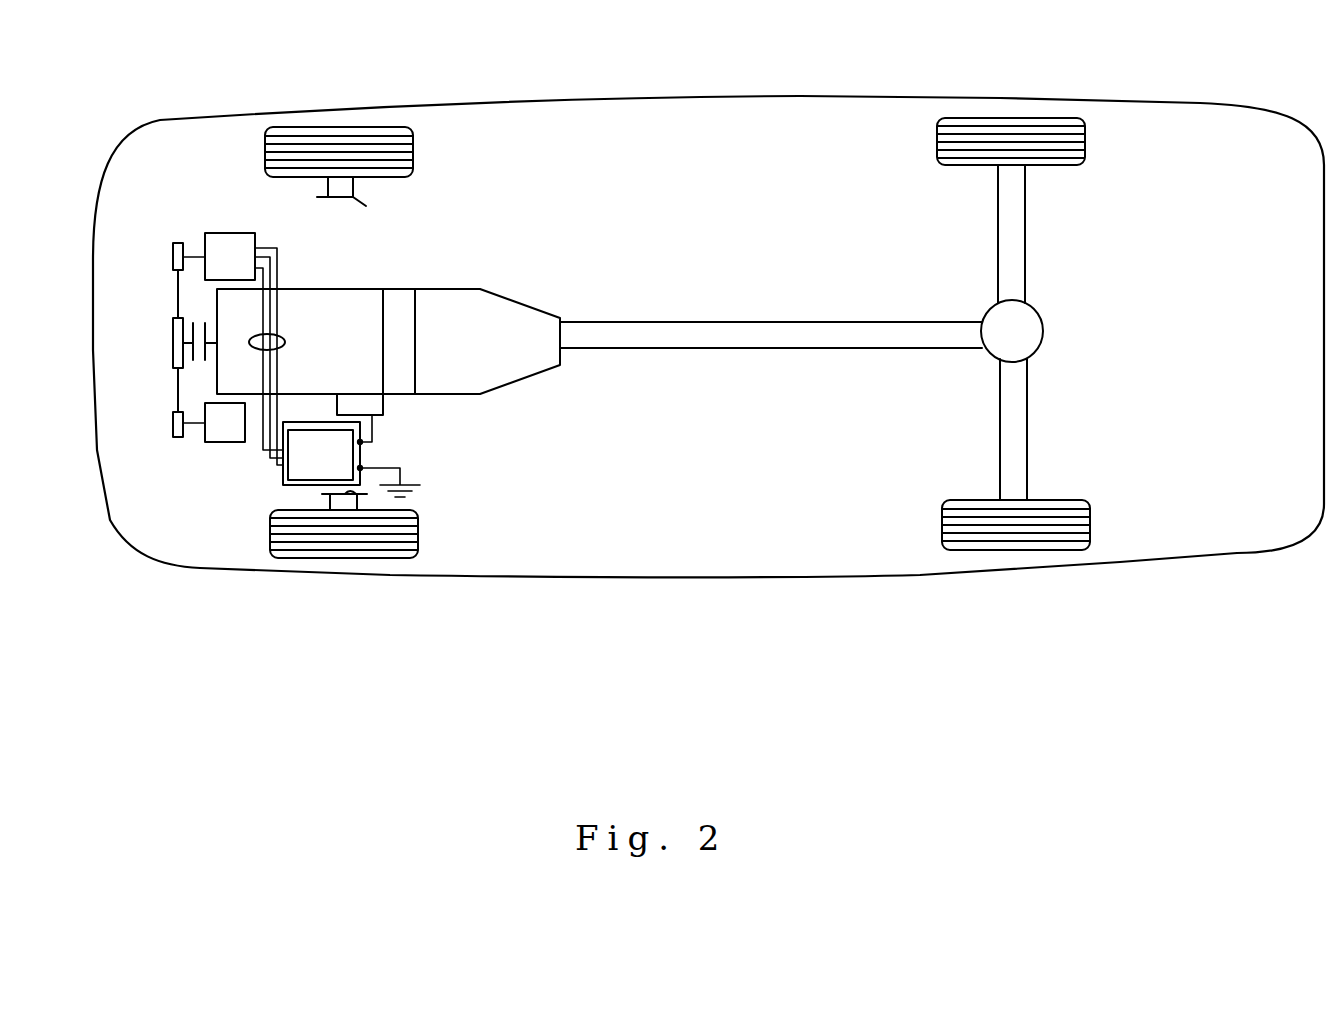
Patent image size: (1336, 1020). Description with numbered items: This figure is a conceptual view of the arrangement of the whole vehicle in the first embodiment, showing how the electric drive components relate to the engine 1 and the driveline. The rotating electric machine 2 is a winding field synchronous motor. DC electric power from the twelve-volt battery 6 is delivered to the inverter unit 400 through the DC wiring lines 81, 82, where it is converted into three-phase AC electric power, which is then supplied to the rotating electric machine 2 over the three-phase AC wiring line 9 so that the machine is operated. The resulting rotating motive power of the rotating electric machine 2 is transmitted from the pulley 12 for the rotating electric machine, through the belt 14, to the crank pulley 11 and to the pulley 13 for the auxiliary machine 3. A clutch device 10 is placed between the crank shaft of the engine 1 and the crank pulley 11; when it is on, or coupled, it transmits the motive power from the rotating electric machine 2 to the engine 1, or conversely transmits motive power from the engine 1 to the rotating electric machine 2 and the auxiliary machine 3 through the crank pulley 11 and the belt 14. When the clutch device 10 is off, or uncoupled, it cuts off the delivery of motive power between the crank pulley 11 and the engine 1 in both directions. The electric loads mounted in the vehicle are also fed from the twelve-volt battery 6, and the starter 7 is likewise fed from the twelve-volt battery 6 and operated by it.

The engine 1 is at (341, 287).
The rotating electric machine 2 is at (233, 262).
The auxiliary machine 3 is at (228, 443).
The 12V battery 6 is at (308, 420).
The starter 7 is at (362, 410).
The three-phase AC wiring line 9 is at (286, 339).
The clutch device 10 is at (200, 365).
The crank pulley 11 is at (173, 341).
The pulley for a rotating electric machine 12 is at (173, 256).
The pulley for an auxiliary machine 13 is at (173, 423).
The belt 14 is at (178, 298).
The DC wiring line 81 is at (360, 442).
The DC wiring line 82 is at (360, 468).
The inverter unit 400 is at (300, 462).